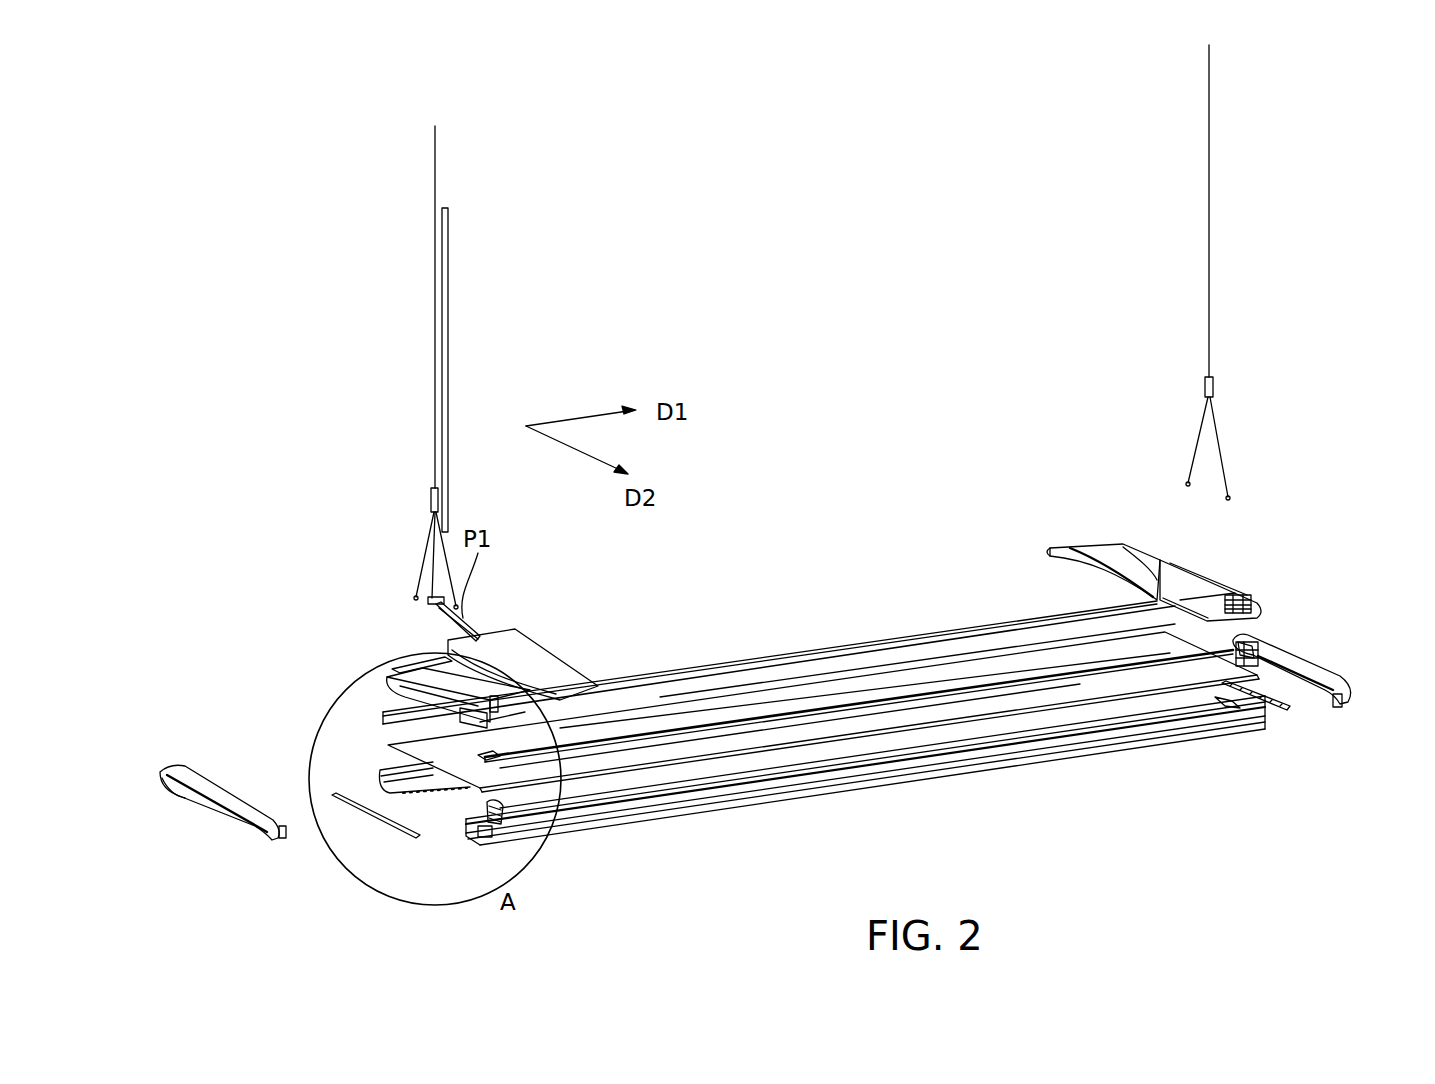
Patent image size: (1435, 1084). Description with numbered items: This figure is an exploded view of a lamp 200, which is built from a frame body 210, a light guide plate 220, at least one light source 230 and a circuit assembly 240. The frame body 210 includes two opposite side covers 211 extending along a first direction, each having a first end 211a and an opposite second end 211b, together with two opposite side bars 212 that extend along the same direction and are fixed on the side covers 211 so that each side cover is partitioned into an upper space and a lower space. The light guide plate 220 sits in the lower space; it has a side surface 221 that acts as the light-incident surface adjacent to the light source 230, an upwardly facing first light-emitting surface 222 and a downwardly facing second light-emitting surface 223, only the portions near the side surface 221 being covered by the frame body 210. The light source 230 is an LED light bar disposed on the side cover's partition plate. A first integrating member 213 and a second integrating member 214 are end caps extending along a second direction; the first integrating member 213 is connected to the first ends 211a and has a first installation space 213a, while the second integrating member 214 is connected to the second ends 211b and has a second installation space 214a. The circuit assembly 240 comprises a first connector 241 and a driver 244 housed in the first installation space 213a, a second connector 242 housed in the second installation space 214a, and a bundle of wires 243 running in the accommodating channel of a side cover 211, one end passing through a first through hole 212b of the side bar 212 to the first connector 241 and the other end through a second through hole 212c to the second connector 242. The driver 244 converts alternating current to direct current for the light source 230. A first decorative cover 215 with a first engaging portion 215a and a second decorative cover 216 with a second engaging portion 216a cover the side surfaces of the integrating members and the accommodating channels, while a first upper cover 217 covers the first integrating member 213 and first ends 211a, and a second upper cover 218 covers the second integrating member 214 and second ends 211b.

The lamp 200 is at (279, 165).
The frame body 210 is at (374, 757).
The side covers 211 is at (380, 782).
The first end 211a is at (492, 838).
The second end 211b is at (1247, 722).
The side bars 212 is at (813, 657).
The first through hole 212b is at (605, 745).
The second through hole 212c is at (1252, 664).
The first integrating member 213 is at (383, 686).
The first installation space 213a is at (523, 708).
The second integrating member 214 is at (1240, 592).
The second installation space 214a is at (1207, 597).
The first decorative cover 215 is at (210, 800).
The first engaging portion 215a is at (284, 840).
The second decorative cover 216 is at (1282, 664).
The second engaging portion 216a is at (1338, 710).
The first upper cover 217 is at (500, 630).
The second upper cover 218 is at (1093, 548).
The light guide plate 220 is at (728, 705).
The side surface 221 is at (940, 724).
The first light-emitting surface 222 is at (903, 680).
The second light-emitting surface 223 is at (1012, 705).
The light source 230 is at (442, 798).
The circuit assembly 240 is at (410, 660).
The first connector 241 is at (395, 670).
The second connector 242 is at (1252, 605).
The bundle of wires 243 is at (506, 826).
The driver 244 is at (435, 668).